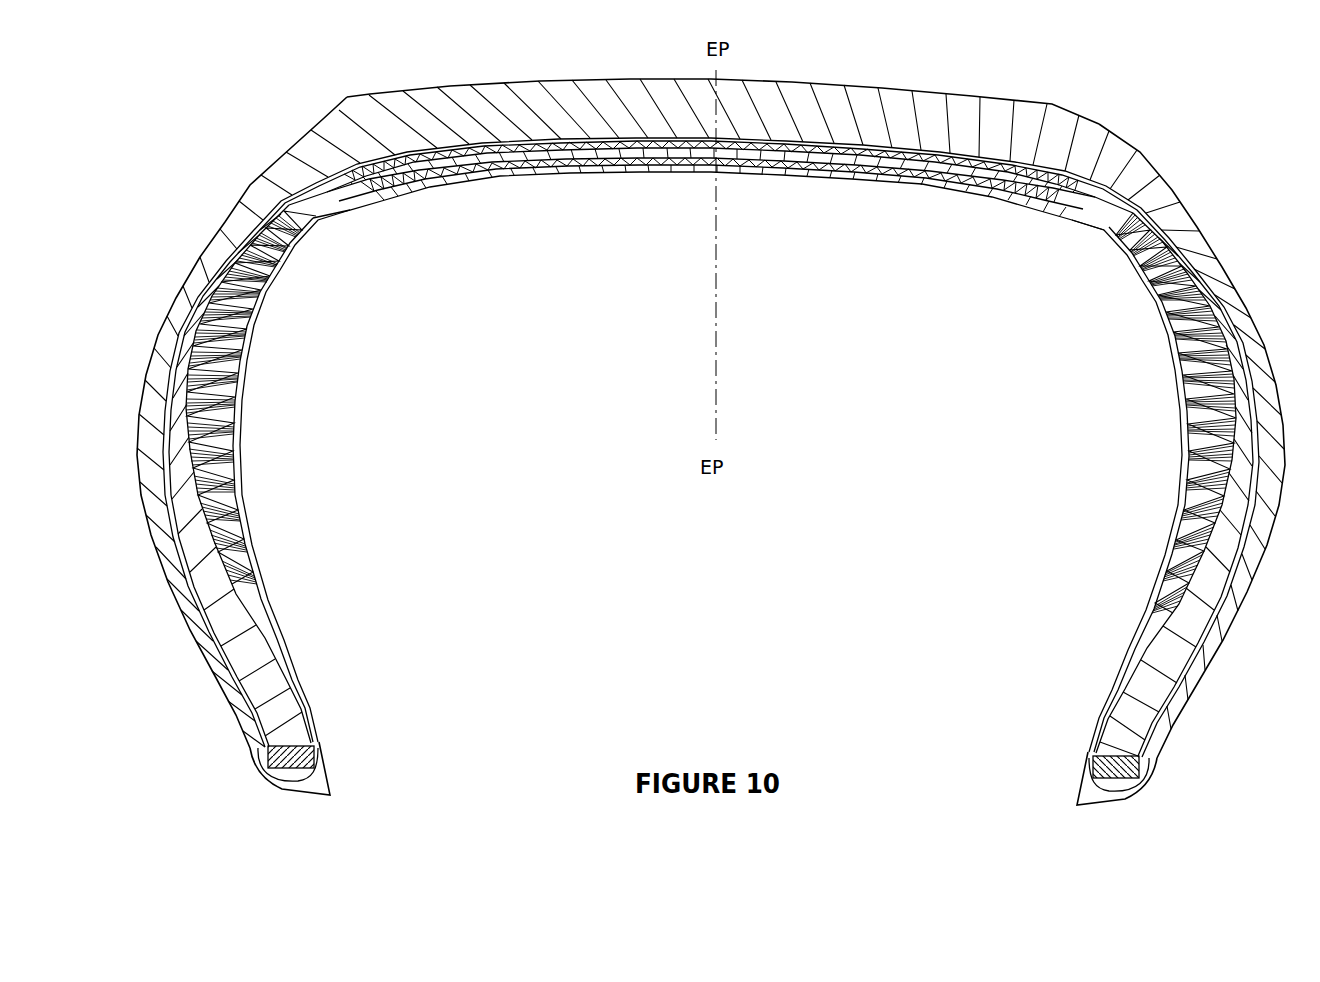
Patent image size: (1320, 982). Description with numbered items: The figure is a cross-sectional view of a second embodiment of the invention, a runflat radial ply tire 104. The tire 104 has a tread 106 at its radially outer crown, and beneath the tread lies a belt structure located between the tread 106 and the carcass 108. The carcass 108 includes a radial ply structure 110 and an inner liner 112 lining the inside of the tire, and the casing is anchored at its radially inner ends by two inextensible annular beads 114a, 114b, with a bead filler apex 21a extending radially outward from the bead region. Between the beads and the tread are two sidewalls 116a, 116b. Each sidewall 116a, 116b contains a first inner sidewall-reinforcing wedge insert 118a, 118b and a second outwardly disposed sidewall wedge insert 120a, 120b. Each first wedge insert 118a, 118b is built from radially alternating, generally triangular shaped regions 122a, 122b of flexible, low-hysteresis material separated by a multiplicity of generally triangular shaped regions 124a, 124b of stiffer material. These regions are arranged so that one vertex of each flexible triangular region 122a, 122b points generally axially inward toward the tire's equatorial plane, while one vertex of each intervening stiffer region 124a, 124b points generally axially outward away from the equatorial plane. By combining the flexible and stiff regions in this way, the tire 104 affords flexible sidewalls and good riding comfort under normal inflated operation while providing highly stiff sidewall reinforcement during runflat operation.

The runflat radial ply tire 104 is at (906, 76).
The tread 106 is at (474, 85).
The carcass 108 is at (753, 162).
The radial ply structure 110 is at (762, 150).
The inner liner 112 is at (447, 187).
The inextensible annular bead 114a is at (300, 757).
The inextensible annular bead 114b is at (1137, 783).
The sidewall 116a is at (138, 542).
The sidewall 116b is at (1265, 573).
The first inner sidewall-reinforcing wedge insert 118a is at (258, 337).
The first inner sidewall-reinforcing wedge insert 118b is at (1163, 500).
The second outwardly disposed sidewall wedge insert 120a is at (232, 590).
The second outwardly disposed sidewall wedge insert 120b is at (1170, 535).
The generally triangular shaped region of flexible, low-hysteresis material 122a is at (228, 523).
The generally triangular shaped region of flexible, low-hysteresis material 122b is at (1185, 473).
The generally triangular shaped region of stiffer material 124a is at (233, 410).
The generally triangular shaped region of stiffer material 124b is at (1182, 380).
The bead filler apex 21a is at (245, 670).